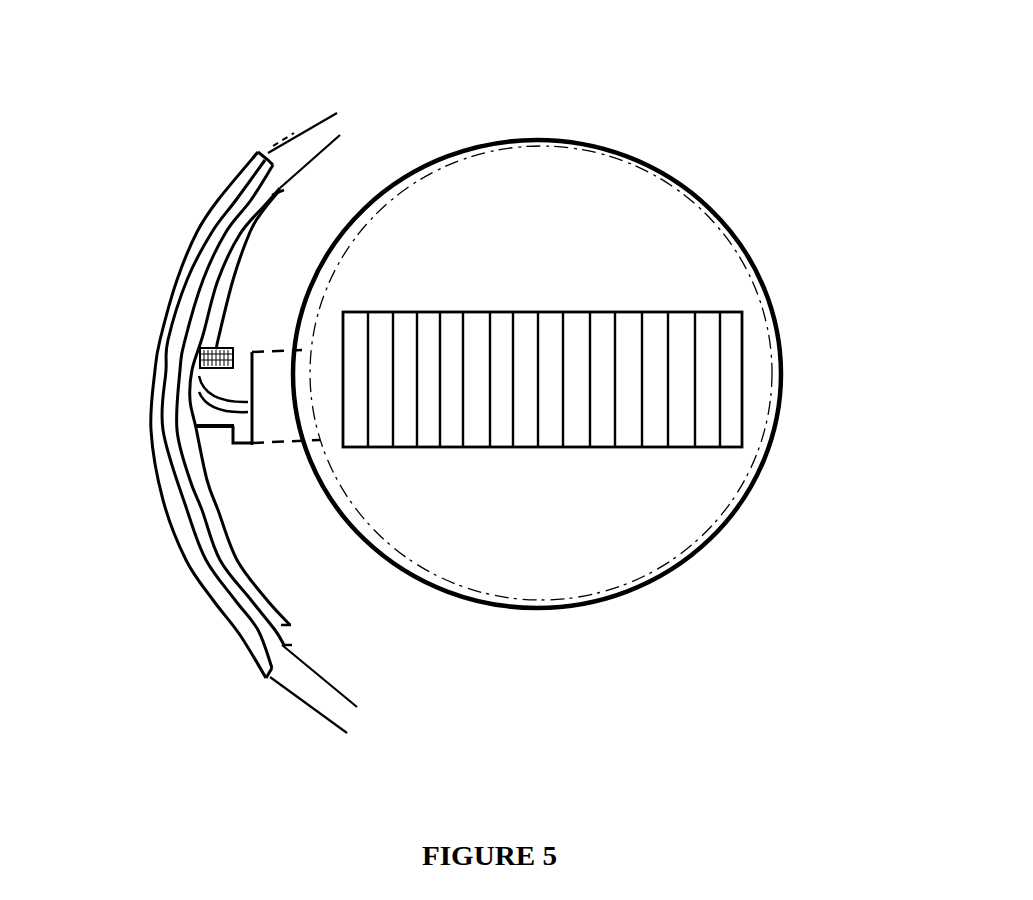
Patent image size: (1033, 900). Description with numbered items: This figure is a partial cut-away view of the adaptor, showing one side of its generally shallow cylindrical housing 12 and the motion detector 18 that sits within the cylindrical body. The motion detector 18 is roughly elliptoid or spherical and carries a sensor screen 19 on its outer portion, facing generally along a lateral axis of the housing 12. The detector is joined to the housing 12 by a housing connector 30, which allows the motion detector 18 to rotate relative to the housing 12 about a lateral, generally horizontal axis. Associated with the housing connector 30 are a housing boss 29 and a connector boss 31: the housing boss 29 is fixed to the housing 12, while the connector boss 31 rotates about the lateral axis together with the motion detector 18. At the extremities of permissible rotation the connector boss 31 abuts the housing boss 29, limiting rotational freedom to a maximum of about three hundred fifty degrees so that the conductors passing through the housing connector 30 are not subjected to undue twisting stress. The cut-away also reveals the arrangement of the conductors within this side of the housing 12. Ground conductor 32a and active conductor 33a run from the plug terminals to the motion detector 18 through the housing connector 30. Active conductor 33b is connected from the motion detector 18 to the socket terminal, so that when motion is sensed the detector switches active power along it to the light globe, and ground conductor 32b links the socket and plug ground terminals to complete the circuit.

The housing 12 is at (165, 501).
The motion detector 18 is at (692, 249).
The sensor screen 19 is at (703, 393).
The housing boss 29 is at (190, 247).
The housing connector 30 is at (244, 474).
The connector boss 31 is at (243, 340).
The ground conductor 32a is at (308, 124).
The ground conductor 32b is at (267, 142).
The active conductor 33a is at (336, 126).
The active conductor 33b is at (328, 677).